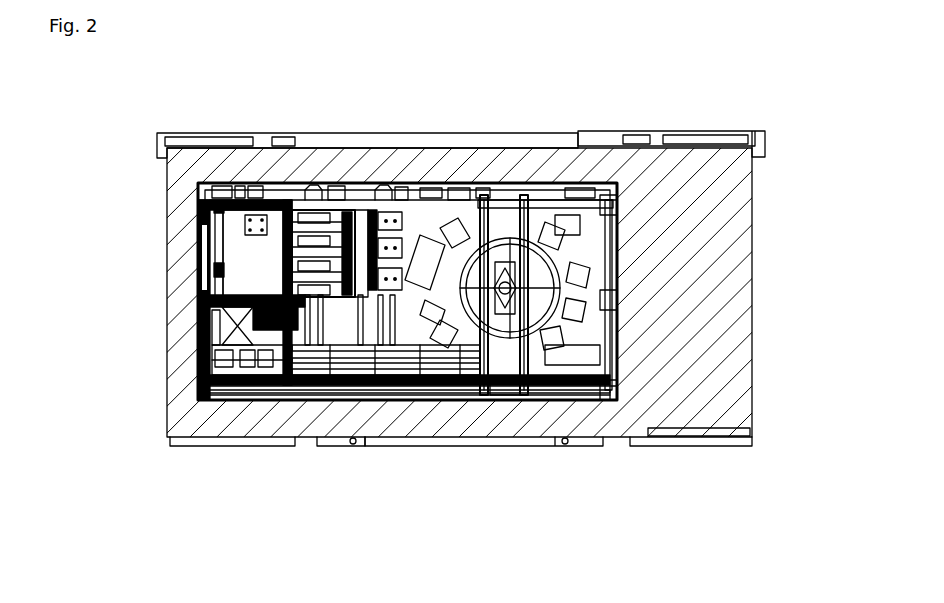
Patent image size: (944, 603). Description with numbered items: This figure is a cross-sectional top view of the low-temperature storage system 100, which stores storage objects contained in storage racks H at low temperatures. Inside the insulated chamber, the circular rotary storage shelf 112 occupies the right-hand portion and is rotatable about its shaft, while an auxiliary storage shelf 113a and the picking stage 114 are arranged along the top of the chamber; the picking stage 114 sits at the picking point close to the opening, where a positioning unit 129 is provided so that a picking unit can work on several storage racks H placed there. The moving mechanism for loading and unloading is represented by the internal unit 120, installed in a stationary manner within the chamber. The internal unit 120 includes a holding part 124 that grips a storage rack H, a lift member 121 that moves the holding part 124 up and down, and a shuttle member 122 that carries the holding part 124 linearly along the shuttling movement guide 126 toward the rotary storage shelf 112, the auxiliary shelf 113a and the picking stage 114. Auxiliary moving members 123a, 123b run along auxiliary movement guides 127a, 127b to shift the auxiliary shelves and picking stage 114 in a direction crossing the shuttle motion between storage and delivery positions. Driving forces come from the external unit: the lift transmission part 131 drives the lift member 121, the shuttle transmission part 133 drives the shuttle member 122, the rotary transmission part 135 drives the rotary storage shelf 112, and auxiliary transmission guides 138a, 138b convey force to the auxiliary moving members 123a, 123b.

The low-temperature storage system 100 is at (104, 90).
The rotary storage shelf 112 is at (602, 140).
The auxiliary storage shelf 113a is at (405, 196).
The picking stage 114 is at (250, 198).
The internal unit 120 is at (553, 517).
The lift member 121 is at (175, 425).
The shuttle member 122 is at (292, 400).
The auxiliary moving member 123a is at (488, 200).
The auxiliary moving member 123b is at (250, 200).
The holding part 124 is at (210, 290).
The shuttling movement guide 126 is at (475, 392).
The auxiliary movement guide 127a is at (402, 382).
The auxiliary movement guide 127b is at (352, 388).
The positioning unit 129 is at (329, 198).
The lift transmission part 131 is at (210, 355).
The shuttle transmission part 133 is at (210, 385).
The rotary transmission part 135 is at (525, 200).
The auxiliary transmission guide 138a is at (385, 196).
The auxiliary transmission guide 138b is at (318, 192).
The storage rack H is at (240, 420).